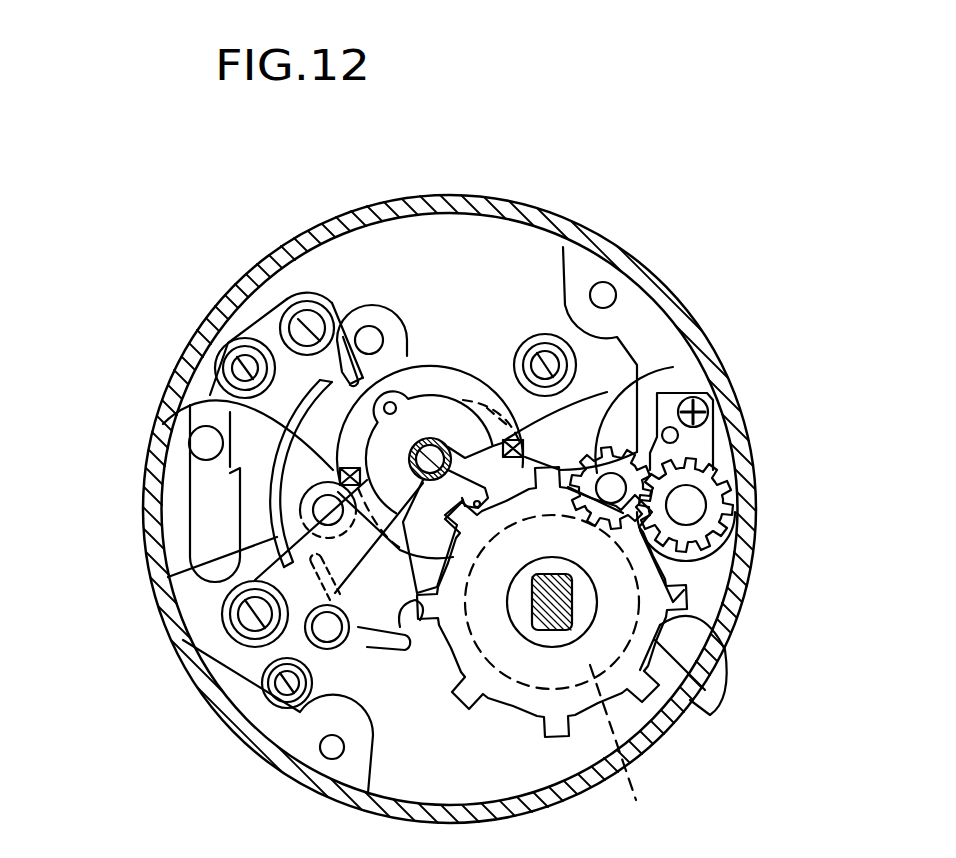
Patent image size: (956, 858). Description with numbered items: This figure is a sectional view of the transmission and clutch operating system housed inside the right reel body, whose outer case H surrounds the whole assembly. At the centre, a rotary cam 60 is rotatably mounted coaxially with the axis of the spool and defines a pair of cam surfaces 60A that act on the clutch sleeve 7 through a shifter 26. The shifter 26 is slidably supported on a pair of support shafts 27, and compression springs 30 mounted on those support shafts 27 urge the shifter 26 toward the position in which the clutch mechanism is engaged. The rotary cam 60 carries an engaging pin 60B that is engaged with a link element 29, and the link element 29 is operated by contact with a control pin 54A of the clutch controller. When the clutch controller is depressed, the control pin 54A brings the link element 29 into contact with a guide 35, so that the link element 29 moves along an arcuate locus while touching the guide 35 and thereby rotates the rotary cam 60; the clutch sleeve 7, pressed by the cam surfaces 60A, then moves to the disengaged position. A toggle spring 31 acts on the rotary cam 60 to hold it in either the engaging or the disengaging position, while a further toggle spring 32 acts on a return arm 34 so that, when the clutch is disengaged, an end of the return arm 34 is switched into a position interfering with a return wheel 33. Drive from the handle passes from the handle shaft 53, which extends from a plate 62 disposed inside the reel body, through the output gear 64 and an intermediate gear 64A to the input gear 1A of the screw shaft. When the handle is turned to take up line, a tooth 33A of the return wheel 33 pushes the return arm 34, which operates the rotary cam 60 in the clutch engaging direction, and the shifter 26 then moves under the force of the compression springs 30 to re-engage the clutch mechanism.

The case H is at (322, 223).
The rotary cam 60 is at (429, 363).
The cam surfaces 60A is at (607, 392).
The engaging pin 60B is at (363, 380).
The clutch sleeve 7 is at (482, 472).
The shifter 26 is at (457, 407).
The support shafts 27 is at (537, 350).
The link element 29 is at (363, 313).
The compression springs 30 is at (547, 334).
The toggle spring 31 is at (307, 297).
The toggle spring 32 is at (340, 652).
The return wheel 33 is at (500, 697).
The tooth 33A is at (706, 713).
The return arm 34 is at (405, 640).
The guide 35 is at (315, 500).
The handle shaft 53 is at (527, 612).
The control pin 54A is at (203, 443).
The plate 62 is at (332, 716).
The output gear 64 is at (625, 765).
The intermediate gear 64A is at (676, 368).
The input gear 1A is at (706, 494).